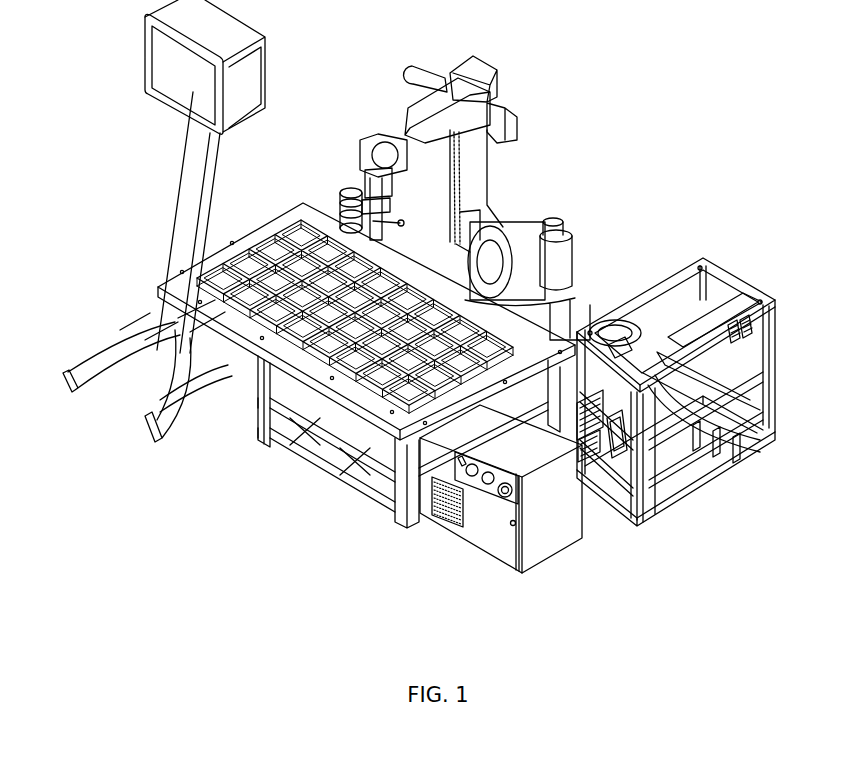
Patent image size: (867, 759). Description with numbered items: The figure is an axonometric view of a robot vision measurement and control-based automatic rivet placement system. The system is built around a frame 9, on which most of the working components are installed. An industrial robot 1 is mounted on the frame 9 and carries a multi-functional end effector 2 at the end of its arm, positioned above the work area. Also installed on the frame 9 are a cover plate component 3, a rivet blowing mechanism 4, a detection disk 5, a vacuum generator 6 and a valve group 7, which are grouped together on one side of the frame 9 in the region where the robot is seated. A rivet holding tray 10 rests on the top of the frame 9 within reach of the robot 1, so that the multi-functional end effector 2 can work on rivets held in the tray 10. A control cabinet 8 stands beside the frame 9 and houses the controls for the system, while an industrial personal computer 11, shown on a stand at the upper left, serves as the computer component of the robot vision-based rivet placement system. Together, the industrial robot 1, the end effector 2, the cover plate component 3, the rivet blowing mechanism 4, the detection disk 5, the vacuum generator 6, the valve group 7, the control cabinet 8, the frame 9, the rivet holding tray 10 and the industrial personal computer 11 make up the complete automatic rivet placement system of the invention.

The industrial robot 1 is at (493, 135).
The multi-functional end effector 2 is at (380, 215).
The cover plate component 3 is at (703, 262).
The rivet blowing mechanism 4 is at (740, 337).
The detection disk 5 is at (673, 373).
The vacuum generator 6 is at (677, 493).
The valve group 7 is at (628, 518).
The control cabinet 8 is at (552, 498).
The frame 9 is at (403, 475).
The rivet holding tray 10 is at (340, 325).
The industrial personal computer 11 is at (190, 83).